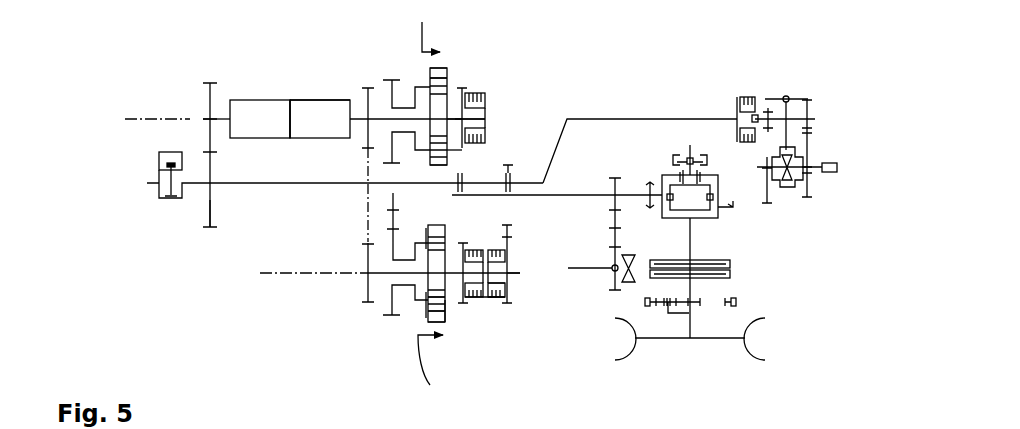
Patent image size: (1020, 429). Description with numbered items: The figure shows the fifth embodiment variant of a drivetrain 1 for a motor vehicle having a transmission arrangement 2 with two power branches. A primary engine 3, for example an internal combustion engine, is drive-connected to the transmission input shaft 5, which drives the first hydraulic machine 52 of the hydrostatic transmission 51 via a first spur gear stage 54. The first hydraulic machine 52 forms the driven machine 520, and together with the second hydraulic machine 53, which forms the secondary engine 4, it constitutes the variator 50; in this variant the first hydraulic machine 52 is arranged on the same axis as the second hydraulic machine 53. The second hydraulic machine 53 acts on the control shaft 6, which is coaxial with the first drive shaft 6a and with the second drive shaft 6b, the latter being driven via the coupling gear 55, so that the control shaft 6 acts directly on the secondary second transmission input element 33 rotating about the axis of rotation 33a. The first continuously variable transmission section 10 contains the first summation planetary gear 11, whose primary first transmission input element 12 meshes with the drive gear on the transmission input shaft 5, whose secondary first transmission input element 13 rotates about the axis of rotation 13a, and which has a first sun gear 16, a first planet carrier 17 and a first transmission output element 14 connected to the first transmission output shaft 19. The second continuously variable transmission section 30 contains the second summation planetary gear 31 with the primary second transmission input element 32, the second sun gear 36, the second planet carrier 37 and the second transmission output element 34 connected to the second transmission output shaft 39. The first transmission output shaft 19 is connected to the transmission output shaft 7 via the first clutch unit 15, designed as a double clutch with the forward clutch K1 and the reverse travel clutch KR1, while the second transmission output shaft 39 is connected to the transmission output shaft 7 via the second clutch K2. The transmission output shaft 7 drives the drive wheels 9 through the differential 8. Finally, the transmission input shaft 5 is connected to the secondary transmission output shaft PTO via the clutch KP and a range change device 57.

The drivetrain 1 is at (554, 342).
The transmission arrangement 2 is at (412, 352).
The primary engine 3 is at (138, 157).
The secondary engine 4 is at (328, 98).
The transmission input shaft 5 is at (238, 185).
The control shaft 6 is at (362, 124).
The first drive shaft 6a is at (388, 285).
The second drive shaft 6b is at (395, 92).
The transmission output shaft 7 is at (573, 196).
The differential 8 is at (722, 215).
The drive wheels 9 is at (765, 318).
The first continuously variable transmission section 10 is at (438, 216).
The first summation planetary gear 11 is at (448, 335).
The primary first transmission input element 12 is at (396, 237).
The secondary first transmission input element 13 is at (418, 287).
The axis of rotation 13a is at (268, 274).
The first transmission output element 14 is at (457, 320).
The first clutch unit 15 is at (548, 345).
The first sun gear 16 is at (427, 268).
The first planet carrier 17 is at (413, 303).
The first transmission output shaft 19 is at (520, 272).
The second continuously variable transmission section 30 is at (425, 173).
The second summation planetary gear 31 is at (454, 65).
The primary second transmission input element 32 is at (430, 93).
The secondary second transmission input element 33 is at (424, 120).
The axis of rotation 33a is at (130, 118).
The second transmission output element 34 is at (449, 140).
The second sun gear 36 is at (446, 128).
The second planet carrier 37 is at (426, 85).
The second transmission output shaft 39 is at (488, 118).
The variator 50 is at (276, 82).
The hydrostatic transmission 51 is at (283, 140).
The first hydraulic machine 52 is at (260, 119).
The second hydraulic machine 53 is at (320, 119).
The first spur gear stage 54 is at (208, 233).
The coupling gear 55 is at (367, 207).
The range change device 57 is at (797, 188).
The driven machine 520 is at (227, 100).
The first clutch K1 is at (485, 250).
The second clutch K2 is at (480, 93).
The clutch KP is at (742, 95).
The first reverse travel clutch KR1 is at (518, 312).
The secondary transmission output shaft PTO is at (836, 173).